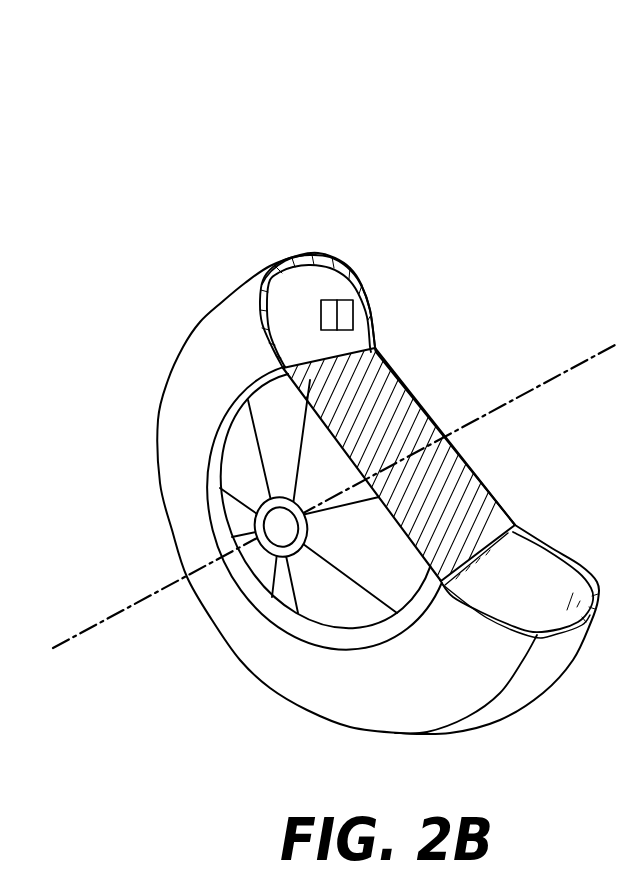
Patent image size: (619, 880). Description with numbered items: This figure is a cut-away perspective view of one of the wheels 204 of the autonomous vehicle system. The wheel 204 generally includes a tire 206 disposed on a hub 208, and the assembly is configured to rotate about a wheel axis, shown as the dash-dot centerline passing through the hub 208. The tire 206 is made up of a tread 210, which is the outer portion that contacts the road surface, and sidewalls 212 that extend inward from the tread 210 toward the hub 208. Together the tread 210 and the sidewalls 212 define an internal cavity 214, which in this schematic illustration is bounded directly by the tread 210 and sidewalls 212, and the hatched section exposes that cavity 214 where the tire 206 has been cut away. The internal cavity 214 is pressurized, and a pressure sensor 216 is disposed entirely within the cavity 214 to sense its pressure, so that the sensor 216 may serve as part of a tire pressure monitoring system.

The wheel 204 is at (323, 401).
The tire 206 is at (180, 493).
The hub 208 is at (468, 490).
The tread 210 is at (240, 277).
The sidewalls 212 is at (200, 366).
The internal cavity 214 is at (297, 292).
The pressure sensor 216 is at (338, 313).